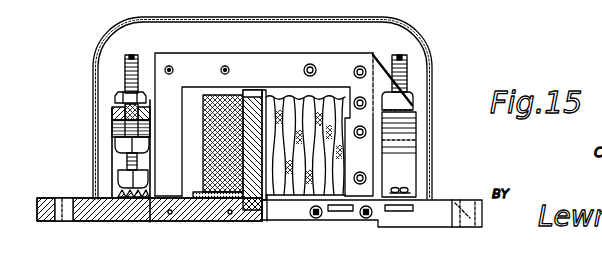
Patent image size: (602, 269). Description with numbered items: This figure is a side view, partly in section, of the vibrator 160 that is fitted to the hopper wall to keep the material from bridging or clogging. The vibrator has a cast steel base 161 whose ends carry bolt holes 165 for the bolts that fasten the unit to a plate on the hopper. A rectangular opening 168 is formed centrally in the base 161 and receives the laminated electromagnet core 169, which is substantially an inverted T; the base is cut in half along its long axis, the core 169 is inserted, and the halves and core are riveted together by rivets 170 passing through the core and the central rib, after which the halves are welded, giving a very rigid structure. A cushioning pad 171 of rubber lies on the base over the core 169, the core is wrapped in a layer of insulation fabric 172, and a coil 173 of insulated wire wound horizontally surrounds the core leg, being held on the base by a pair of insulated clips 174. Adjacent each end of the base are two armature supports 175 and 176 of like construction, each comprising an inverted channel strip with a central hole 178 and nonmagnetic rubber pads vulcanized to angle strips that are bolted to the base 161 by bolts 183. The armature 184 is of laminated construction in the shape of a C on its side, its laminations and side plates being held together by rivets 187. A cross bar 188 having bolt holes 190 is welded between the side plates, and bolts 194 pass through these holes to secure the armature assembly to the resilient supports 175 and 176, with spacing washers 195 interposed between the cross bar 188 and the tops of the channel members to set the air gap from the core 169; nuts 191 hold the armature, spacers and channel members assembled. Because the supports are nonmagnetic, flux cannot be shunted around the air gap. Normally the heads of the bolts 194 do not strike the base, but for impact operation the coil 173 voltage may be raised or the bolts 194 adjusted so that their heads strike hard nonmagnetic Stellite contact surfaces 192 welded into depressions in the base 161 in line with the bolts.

The vibrator 160 is at (99, 111).
The base 161 is at (418, 223).
The bolt holes 165 is at (61, 202).
The rectangular opening 168 is at (160, 221).
The laminated electromagnet core 169 is at (243, 220).
The rivets 170 is at (317, 219).
The cushioning pad 171 is at (200, 191).
The layer of insulation fabric 172 is at (254, 99).
The coil 173 is at (319, 100).
The clips 174 is at (265, 94).
The armature support 175 is at (408, 163).
The armature support 176 is at (118, 157).
The hole 178 is at (150, 146).
The bolts 183 is at (401, 192).
The armature 184 is at (181, 62).
The rivets 187 is at (312, 63).
The cross bar 188 is at (113, 109).
The bolt holes 190 is at (118, 94).
The nuts 191 is at (411, 101).
The contact surfaces 192 is at (126, 204).
The bolts 194 is at (126, 64).
The spacing washers 195 is at (113, 128).